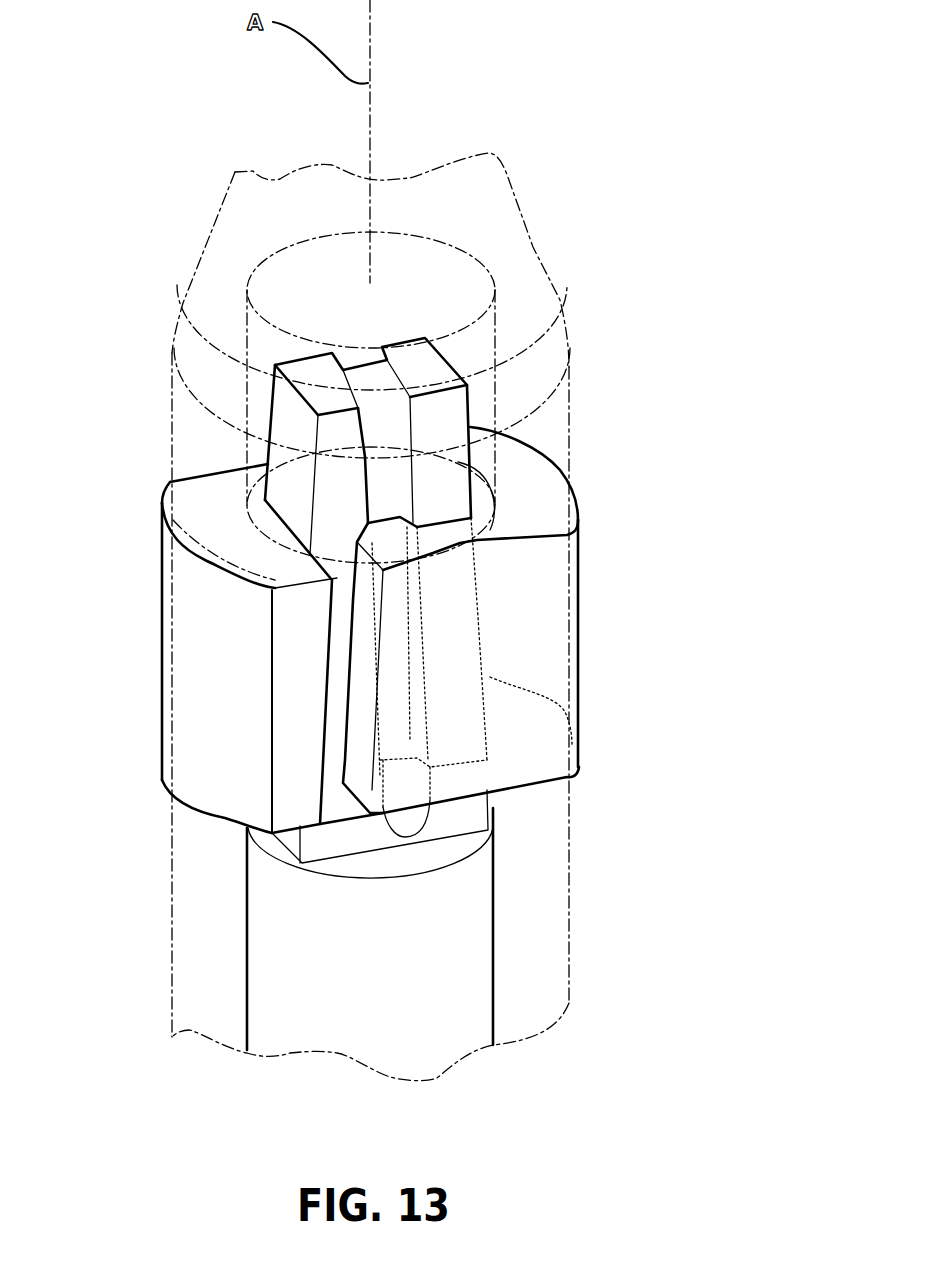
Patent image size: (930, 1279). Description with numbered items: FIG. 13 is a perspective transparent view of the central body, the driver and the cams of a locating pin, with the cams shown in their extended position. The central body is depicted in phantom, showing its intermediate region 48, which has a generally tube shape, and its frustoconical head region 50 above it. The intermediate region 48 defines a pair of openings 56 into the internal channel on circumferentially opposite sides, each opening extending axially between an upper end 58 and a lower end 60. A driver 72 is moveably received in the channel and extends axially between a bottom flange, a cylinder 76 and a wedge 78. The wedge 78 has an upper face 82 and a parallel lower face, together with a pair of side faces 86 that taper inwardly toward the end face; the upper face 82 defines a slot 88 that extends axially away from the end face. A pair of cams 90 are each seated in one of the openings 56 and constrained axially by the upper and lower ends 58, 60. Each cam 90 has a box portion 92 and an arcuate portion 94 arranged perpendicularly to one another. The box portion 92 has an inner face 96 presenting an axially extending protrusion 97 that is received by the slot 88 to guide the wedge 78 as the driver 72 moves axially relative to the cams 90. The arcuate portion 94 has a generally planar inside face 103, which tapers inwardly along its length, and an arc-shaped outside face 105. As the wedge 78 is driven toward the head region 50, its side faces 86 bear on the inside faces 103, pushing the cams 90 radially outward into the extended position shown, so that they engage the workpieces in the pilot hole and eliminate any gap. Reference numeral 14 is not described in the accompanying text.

The coupling assembly 14 is at (562, 273).
The intermediate region 48 is at (558, 820).
The head region 50 is at (488, 202).
The openings 56 is at (217, 555).
The upper end 58 is at (183, 540).
The lower end 60 is at (560, 703).
The driver 72 is at (508, 1000).
The cylinder 76 is at (293, 1003).
The wedge 78 is at (462, 453).
The upper face 82 is at (472, 643).
The side faces 86 is at (292, 410).
The slot 88 is at (380, 415).
The cams 90 is at (580, 527).
The box portion 92 is at (440, 545).
The arcuate portion 94 is at (183, 683).
The inner face 96 is at (473, 517).
The protrusion 97 is at (382, 533).
The inside face 103 is at (330, 710).
The outside face 105 is at (187, 743).